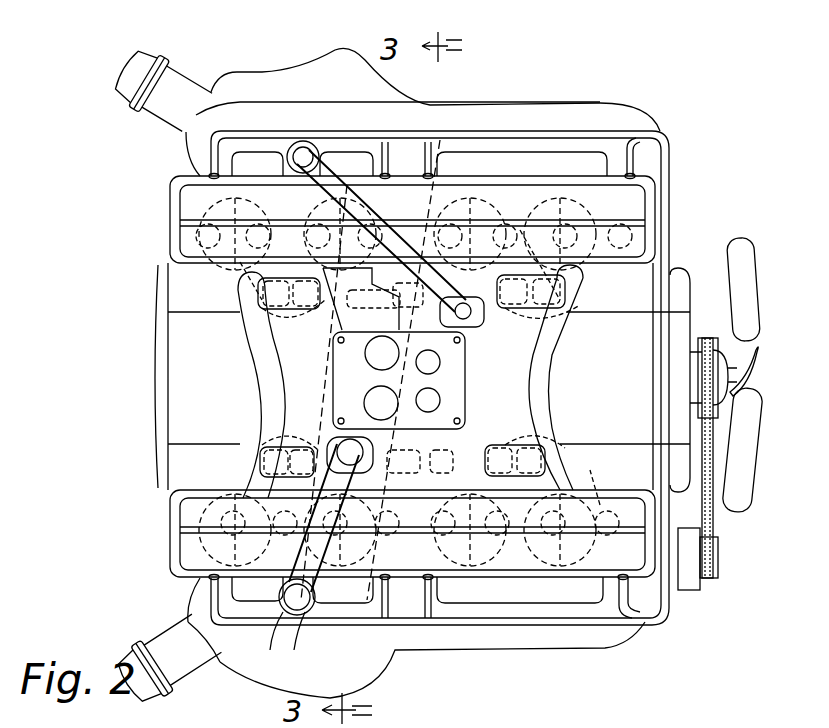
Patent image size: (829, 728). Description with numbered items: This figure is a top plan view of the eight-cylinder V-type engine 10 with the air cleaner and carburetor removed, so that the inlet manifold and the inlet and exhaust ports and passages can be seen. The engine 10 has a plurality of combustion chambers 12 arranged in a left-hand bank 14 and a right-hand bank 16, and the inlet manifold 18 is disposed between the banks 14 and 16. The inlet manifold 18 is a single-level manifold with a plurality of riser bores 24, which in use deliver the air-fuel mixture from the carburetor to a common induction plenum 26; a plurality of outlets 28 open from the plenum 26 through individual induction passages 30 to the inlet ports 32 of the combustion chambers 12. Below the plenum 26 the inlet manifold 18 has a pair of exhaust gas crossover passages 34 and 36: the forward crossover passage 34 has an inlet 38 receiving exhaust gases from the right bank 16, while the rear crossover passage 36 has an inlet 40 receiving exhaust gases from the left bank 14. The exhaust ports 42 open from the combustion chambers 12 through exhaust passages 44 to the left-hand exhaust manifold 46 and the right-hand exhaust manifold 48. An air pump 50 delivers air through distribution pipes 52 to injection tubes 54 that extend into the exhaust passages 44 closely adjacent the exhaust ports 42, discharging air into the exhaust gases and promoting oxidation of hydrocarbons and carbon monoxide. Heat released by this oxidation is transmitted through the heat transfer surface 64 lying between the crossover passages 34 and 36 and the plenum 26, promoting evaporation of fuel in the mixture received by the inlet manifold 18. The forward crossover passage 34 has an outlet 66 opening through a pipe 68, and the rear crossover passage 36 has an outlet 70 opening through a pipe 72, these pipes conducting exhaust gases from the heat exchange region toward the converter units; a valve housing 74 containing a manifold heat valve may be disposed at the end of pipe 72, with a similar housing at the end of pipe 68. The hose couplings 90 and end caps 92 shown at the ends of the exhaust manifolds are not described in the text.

The V-8 engine 10 is at (157, 304).
The combustion chambers 12 is at (230, 470).
The left-hand bank 14 is at (176, 204).
The right-hand bank 16 is at (172, 540).
The inlet manifold 18 is at (282, 348).
The riser bores 24 is at (367, 365).
The common induction plenum 26 is at (562, 337).
The outlets 28 is at (270, 305).
The induction passages 30 is at (380, 290).
The inlet ports 32 is at (240, 262).
The forward exhaust gas crossover passage 34 is at (470, 432).
The rear exhaust gas crossover passage 36 is at (322, 407).
The inlet of forward crossover passage 38 is at (425, 462).
The inlet of rear crossover passage 40 is at (392, 295).
The exhaust ports 42 is at (200, 216).
The exhaust passages 44 is at (223, 200).
The left-hand exhaust manifold 46 is at (508, 108).
The right-hand exhaust manifold 48 is at (482, 633).
The air pump 50 is at (684, 588).
The distribution pipes 52 is at (565, 133).
The injection tubes 54 is at (208, 150).
The heat transfer surface 64 is at (318, 380).
The outlet of forward crossover passage 66 is at (470, 300).
The pipe 68 is at (337, 173).
The outlet of rear crossover passage 70 is at (352, 452).
The pipe 72 is at (300, 616).
The valve housing 74 is at (280, 620).
The hose coupling 90 is at (178, 88).
The hose end cap 92 is at (133, 97).